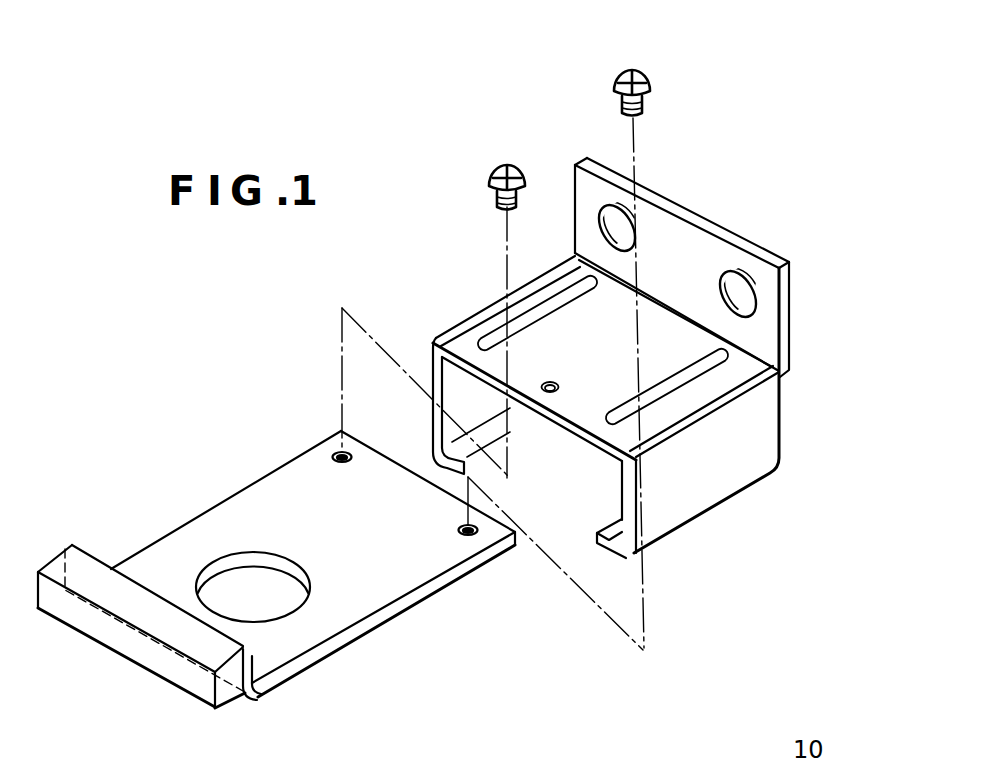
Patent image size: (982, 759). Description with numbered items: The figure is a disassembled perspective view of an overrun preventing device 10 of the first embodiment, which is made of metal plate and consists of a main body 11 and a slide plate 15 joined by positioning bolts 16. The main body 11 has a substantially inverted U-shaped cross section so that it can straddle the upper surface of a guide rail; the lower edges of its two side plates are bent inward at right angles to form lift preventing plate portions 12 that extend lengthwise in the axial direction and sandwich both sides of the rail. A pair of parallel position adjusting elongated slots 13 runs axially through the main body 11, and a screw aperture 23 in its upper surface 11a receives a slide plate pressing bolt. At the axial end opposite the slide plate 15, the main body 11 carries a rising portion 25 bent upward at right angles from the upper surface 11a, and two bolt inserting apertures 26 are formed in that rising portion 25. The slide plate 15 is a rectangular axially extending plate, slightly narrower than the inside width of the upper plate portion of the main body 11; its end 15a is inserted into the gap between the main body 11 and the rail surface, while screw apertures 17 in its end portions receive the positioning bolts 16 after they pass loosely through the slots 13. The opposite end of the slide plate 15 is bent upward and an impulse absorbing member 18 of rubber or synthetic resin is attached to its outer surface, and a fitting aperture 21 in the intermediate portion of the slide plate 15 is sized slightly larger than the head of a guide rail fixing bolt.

The overrun preventing device 10 is at (637, 293).
The main body 11 is at (637, 358).
The upper surface of the main body 11a is at (578, 403).
The lift preventing plate portion 12 is at (607, 522).
The position adjusting elongated slot 13 is at (675, 392).
The slide plate 15 is at (276, 578).
The end of the slide plate 15a is at (382, 454).
The positioning bolt 16 is at (508, 164).
The screw aperture 17 is at (470, 541).
The impulse absorbing member 18 is at (198, 688).
The fitting aperture 21 is at (268, 612).
The screw aperture 23 is at (540, 380).
The rising portion 25 is at (765, 292).
The bolt inserting aperture 26 is at (745, 310).